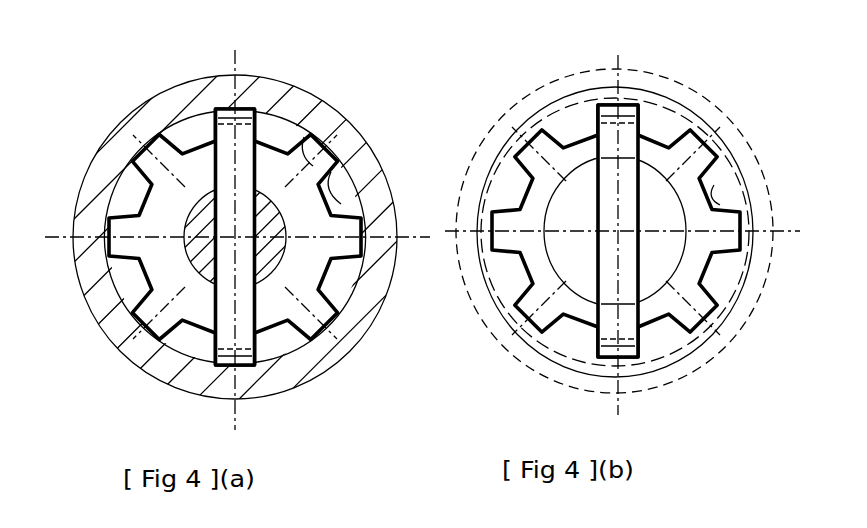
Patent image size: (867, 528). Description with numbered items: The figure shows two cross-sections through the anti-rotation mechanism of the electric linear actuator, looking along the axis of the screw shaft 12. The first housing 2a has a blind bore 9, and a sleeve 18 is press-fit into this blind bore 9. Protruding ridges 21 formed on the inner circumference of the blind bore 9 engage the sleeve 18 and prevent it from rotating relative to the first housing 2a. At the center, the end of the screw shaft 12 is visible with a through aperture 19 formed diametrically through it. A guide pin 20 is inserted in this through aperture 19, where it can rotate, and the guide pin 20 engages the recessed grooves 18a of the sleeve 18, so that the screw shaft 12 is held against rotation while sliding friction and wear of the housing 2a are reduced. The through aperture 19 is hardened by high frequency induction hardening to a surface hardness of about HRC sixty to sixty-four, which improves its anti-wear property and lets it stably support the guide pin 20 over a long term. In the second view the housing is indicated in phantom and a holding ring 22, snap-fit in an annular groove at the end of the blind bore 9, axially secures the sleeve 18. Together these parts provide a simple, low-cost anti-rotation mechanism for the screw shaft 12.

In FIG. 4a, the first housing 2a is at (270, 90).
In FIG. 4b, the first housing 2a is at (556, 88).
In FIG. 4a, the blind bore 9 is at (282, 335).
In FIG. 4b, the blind bore 9 is at (750, 293).
In FIG. 4a, the screw shaft 12 is at (284, 223).
In FIG. 4b, the screw shaft 12 is at (530, 248).
In FIG. 4a, the sleeve 18 is at (165, 131).
In FIG. 4b, the sleeve 18 is at (512, 193).
In FIG. 4a, the recessed grooves 18a is at (232, 108).
In FIG. 4b, the recessed grooves 18a is at (616, 103).
In FIG. 4a, the through aperture 19 is at (232, 200).
In FIG. 4b, the through aperture 19 is at (612, 196).
In FIG. 4a, the guide pin 20 is at (228, 250).
In FIG. 4b, the guide pin 20 is at (587, 132).
In FIG. 4a, the protruding ridges 21 is at (342, 203).
In FIG. 4b, the protruding ridges 21 is at (727, 197).
In FIG. 4b, the holding ring 22 is at (668, 112).